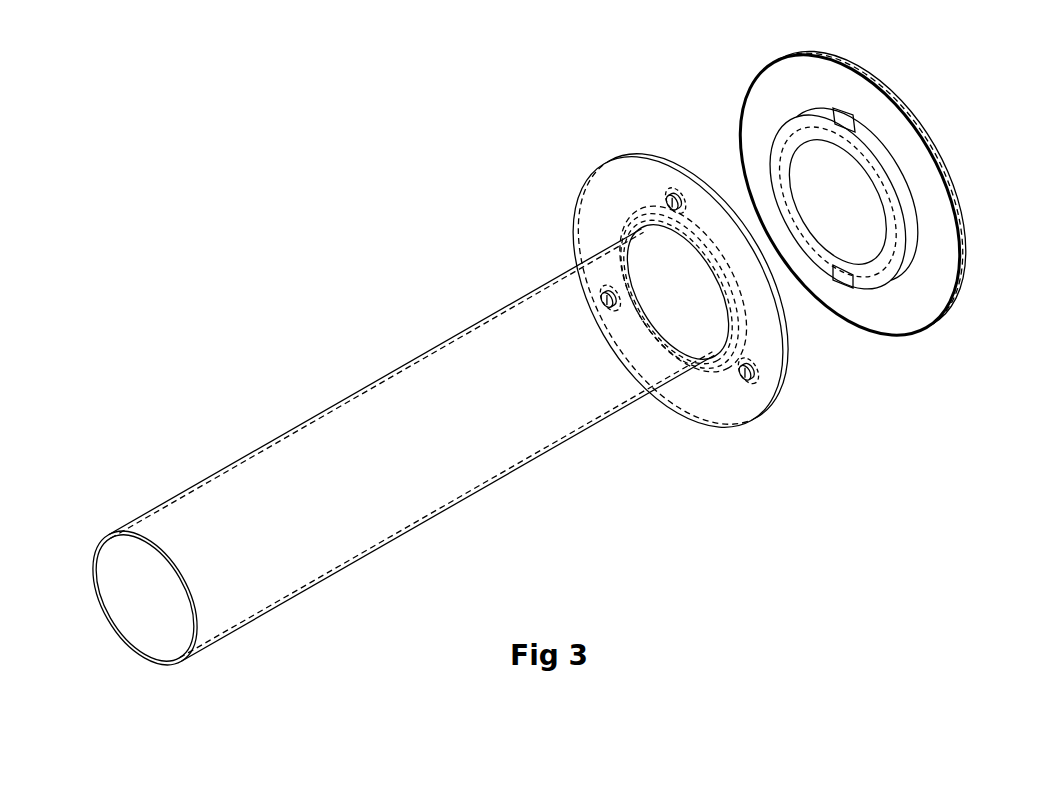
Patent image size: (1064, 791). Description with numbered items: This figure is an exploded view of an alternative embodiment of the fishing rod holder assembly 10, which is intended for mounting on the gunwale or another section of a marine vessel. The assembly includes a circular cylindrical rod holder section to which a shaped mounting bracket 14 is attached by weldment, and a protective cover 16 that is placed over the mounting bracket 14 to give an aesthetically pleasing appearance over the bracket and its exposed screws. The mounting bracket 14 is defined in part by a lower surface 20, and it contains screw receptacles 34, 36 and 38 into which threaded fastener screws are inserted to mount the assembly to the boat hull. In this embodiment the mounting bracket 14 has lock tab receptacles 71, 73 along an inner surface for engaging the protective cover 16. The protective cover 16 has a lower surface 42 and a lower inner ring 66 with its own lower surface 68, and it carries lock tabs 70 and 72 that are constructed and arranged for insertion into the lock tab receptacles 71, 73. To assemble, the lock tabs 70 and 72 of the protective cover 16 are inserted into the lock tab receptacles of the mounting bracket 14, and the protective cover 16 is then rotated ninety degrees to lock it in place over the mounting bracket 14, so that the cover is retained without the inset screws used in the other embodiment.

The fishing rod holder assembly 10 is at (375, 507).
The mounting bracket 14 is at (701, 402).
The protective cover 16 is at (940, 188).
The lower surface 20 is at (594, 213).
The screw receptacle 34 is at (672, 193).
The screw receptacle 36 is at (752, 375).
The screw receptacle 38 is at (613, 292).
The lower surface 42 is at (797, 100).
The lower inner ring 66 is at (911, 237).
The lower surface 68 is at (832, 305).
The lock tab 70 is at (852, 116).
The lock tab receptacle 71 is at (728, 238).
The lock tab 72 is at (855, 290).
The lock tab receptacle 73 is at (632, 349).